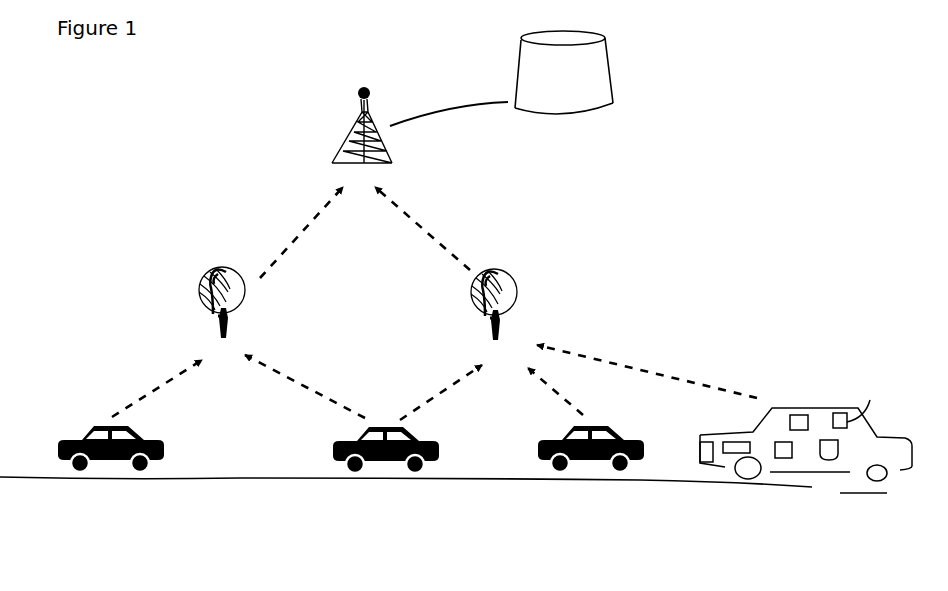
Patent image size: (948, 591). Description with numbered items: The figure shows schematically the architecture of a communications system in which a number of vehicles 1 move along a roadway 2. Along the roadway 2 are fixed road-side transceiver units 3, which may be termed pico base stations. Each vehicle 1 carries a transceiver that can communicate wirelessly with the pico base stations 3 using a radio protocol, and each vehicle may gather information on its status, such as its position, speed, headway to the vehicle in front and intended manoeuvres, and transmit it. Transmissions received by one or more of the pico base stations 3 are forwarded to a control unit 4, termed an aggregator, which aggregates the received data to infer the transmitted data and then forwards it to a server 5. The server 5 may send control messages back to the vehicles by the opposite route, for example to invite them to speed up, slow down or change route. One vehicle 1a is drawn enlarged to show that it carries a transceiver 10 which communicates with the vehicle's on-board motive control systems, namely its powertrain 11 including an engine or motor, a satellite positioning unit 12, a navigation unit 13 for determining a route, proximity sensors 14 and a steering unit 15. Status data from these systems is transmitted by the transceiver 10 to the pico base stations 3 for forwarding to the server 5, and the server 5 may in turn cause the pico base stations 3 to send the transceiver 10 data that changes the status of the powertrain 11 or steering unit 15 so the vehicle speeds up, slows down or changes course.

The vehicle 1 is at (101, 488).
The vehicle 1a is at (827, 407).
The roadway 2 is at (243, 483).
The road-side transceiver unit 3 is at (185, 308).
The control unit 4 is at (322, 143).
The server 5 is at (553, 127).
The transceiver 10 is at (798, 410).
The powertrain 11 is at (730, 455).
The satellite positioning unit 12 is at (866, 415).
The navigation unit 13 is at (830, 460).
The proximity sensors 14 is at (697, 448).
The steering unit 15 is at (783, 460).